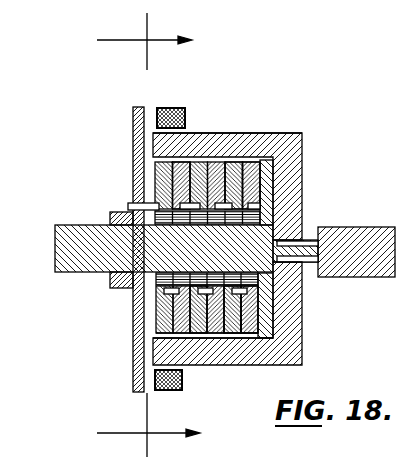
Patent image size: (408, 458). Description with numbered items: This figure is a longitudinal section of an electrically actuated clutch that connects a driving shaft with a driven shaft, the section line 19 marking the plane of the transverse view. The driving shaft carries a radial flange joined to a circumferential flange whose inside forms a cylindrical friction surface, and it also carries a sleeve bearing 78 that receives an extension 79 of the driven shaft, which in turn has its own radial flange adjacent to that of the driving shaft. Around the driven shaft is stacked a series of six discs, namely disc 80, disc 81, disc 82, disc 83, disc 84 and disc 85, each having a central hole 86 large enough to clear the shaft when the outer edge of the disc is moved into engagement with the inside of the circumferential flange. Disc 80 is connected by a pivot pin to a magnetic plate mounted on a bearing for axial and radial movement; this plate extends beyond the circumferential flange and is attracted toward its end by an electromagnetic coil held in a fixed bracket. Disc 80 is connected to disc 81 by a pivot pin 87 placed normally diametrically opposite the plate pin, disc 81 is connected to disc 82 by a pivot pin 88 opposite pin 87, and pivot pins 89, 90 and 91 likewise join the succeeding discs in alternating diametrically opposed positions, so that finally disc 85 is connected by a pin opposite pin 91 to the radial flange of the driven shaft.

The section line 19- 19 is at (148, 235).
The sleeve bearing 78 is at (292, 243).
The extension 79 is at (305, 256).
The disc 85 is at (263, 160).
The pivot pin 88 is at (213, 172).
The disc 81 is at (178, 173).
The disc 83 is at (231, 170).
The pivot pin 90 is at (248, 168).
The central hole 86 is at (184, 216).
The pivot pin 89 is at (208, 297).
The disc 82 is at (197, 322).
The disc 84 is at (231, 322).
The pivot pin 91 is at (236, 332).
The pivot pin 87 is at (160, 301).
The disc 80 is at (160, 322).